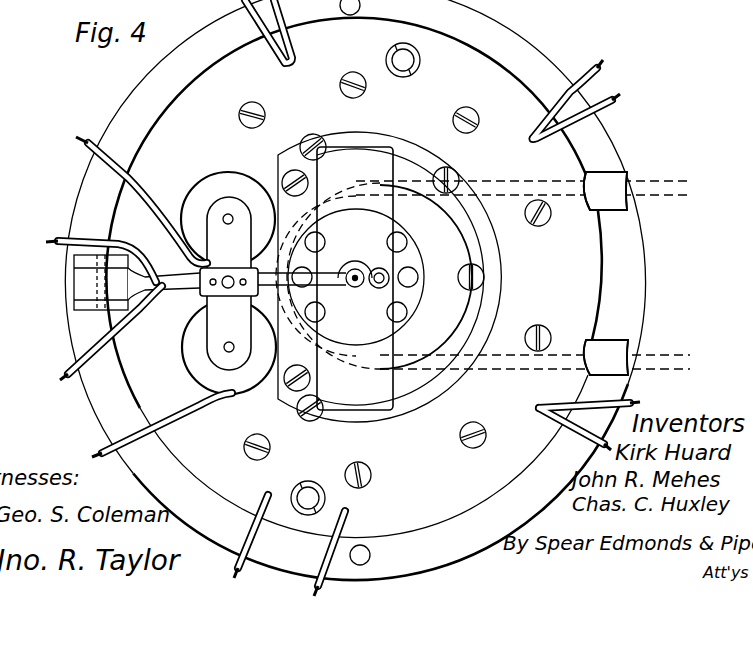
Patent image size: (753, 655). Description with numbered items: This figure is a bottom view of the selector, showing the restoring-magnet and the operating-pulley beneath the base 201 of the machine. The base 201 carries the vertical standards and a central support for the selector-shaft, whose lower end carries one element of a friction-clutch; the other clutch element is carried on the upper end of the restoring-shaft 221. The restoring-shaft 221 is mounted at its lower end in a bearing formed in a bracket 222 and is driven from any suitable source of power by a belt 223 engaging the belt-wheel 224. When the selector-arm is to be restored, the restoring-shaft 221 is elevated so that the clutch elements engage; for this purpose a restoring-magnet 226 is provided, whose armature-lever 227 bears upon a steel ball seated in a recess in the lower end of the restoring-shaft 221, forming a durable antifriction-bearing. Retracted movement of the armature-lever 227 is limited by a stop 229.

The base 201 is at (356, 290).
The restoring-shaft 221 is at (365, 258).
The bracket 222 is at (374, 276).
The belt 223 is at (523, 273).
The belt-wheel 224 is at (428, 320).
The restoring-magnet 226 is at (228, 273).
The armature-lever 227 is at (183, 285).
The stop 229 is at (372, 292).